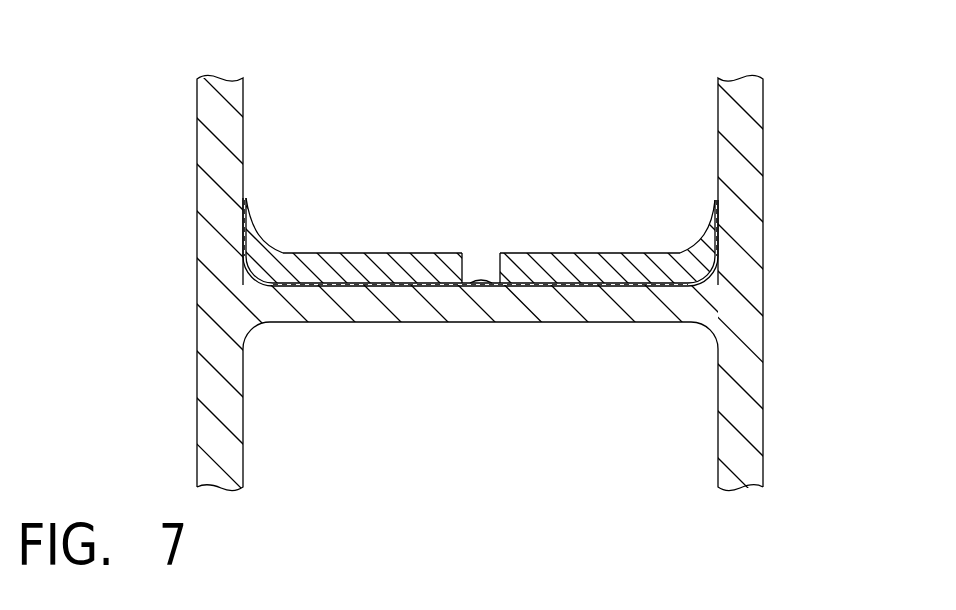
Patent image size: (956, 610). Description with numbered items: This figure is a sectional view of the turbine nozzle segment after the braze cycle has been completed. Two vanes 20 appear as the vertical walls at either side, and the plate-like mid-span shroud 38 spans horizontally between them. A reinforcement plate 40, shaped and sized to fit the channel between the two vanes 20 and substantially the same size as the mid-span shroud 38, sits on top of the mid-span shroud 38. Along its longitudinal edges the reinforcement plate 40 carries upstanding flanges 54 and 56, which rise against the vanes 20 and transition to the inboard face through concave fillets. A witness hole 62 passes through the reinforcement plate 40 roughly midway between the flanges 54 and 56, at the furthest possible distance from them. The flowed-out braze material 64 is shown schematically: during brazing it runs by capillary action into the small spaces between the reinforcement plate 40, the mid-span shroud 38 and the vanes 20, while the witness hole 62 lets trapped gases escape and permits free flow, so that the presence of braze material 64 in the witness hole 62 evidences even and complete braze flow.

The vane 20 is at (213, 200).
The mid-span shroud 38 is at (418, 310).
The reinforcement plate 40 is at (395, 236).
The upstanding flange 54 is at (258, 220).
The upstanding flange 56 is at (710, 218).
The witness hole 62 is at (464, 265).
The braze material 64 is at (483, 281).